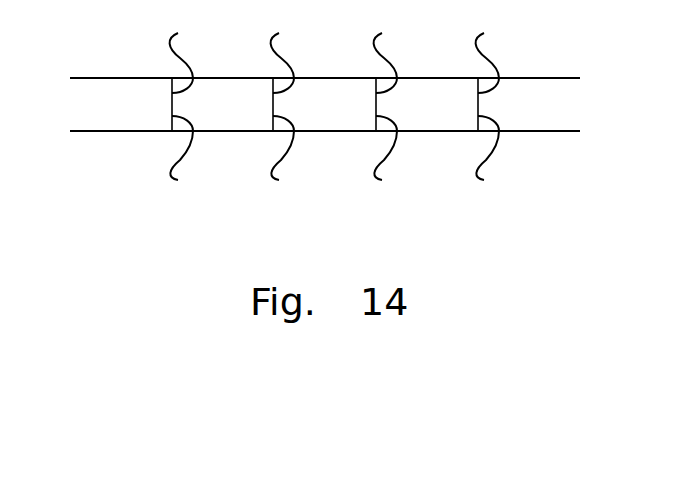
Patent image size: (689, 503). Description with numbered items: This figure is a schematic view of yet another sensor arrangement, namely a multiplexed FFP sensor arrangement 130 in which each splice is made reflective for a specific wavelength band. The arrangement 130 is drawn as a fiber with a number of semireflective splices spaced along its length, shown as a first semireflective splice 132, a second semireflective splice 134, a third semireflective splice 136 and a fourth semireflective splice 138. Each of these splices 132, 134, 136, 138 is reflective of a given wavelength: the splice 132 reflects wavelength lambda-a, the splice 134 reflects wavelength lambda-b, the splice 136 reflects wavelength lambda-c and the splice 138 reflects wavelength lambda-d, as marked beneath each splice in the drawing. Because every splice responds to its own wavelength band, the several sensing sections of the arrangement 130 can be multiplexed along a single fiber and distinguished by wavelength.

The multiplexed FFP sensor arrangement 130 is at (138, 179).
The semireflective splice 132 is at (199, 100).
The semireflective splice 134 is at (300, 100).
The semireflective splice 136 is at (403, 100).
The semireflective splice 138 is at (505, 100).